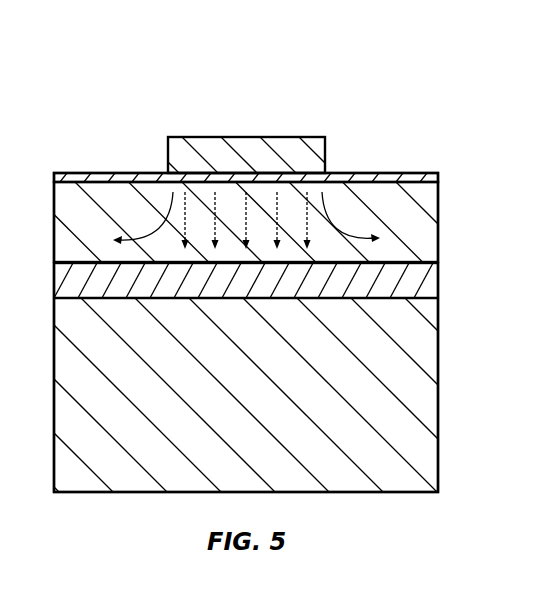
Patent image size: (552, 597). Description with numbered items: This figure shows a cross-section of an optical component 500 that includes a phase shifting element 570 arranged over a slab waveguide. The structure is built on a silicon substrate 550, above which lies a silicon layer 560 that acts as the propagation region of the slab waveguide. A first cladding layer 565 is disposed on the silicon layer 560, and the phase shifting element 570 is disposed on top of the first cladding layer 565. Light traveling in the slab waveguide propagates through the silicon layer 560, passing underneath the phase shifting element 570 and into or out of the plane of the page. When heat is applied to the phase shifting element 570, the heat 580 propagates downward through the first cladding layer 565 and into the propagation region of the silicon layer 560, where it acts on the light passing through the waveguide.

The optical component 500 is at (45, 82).
The silicon substrate 550 is at (438, 280).
The silicon layer 560 is at (438, 220).
The first cladding layer 565 is at (438, 177).
The phase shifting element 570 is at (168, 153).
The heat 580 is at (308, 221).